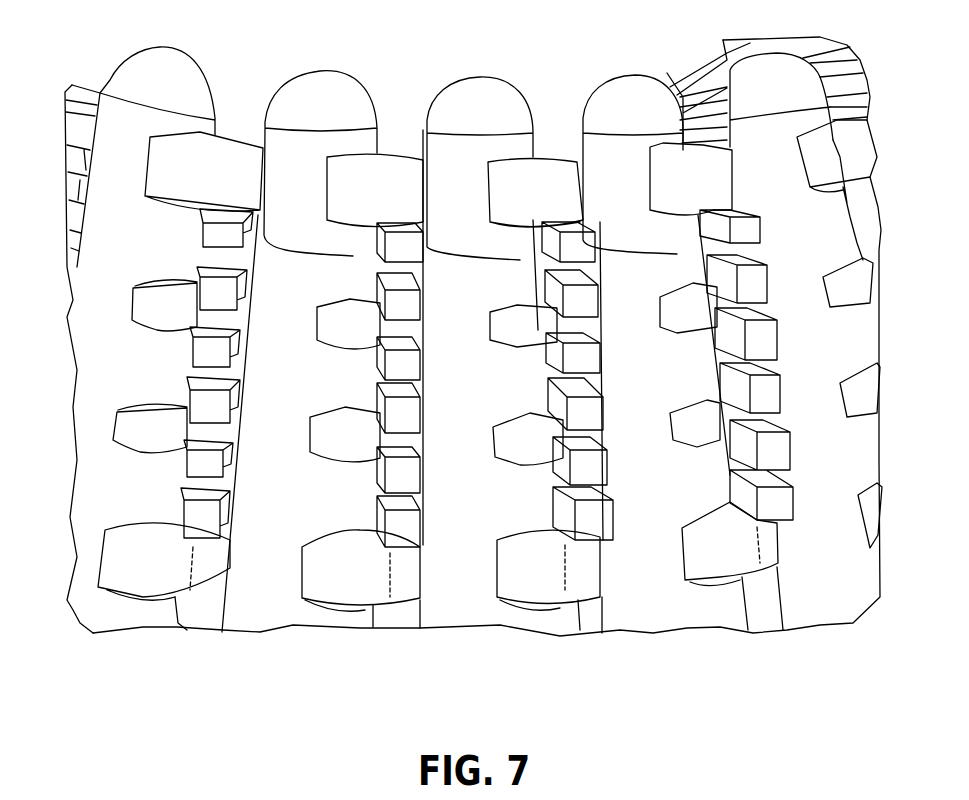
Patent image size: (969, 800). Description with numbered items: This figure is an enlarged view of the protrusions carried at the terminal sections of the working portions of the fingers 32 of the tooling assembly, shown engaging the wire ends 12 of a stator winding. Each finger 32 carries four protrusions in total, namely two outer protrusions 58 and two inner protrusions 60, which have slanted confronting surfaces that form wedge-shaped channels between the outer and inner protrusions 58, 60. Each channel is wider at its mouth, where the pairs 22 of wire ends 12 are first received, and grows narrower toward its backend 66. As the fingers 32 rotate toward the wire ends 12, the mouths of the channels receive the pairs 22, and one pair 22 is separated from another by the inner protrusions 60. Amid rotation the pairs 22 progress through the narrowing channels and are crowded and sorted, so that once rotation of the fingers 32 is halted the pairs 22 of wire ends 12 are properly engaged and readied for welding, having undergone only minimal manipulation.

The wire ends 12 is at (188, 227).
The pairs 22 is at (200, 403).
The fingers 32 is at (272, 605).
The outer protrusions 58 is at (222, 183).
The inner protrusions 60 is at (150, 307).
The backend 66 is at (353, 255).